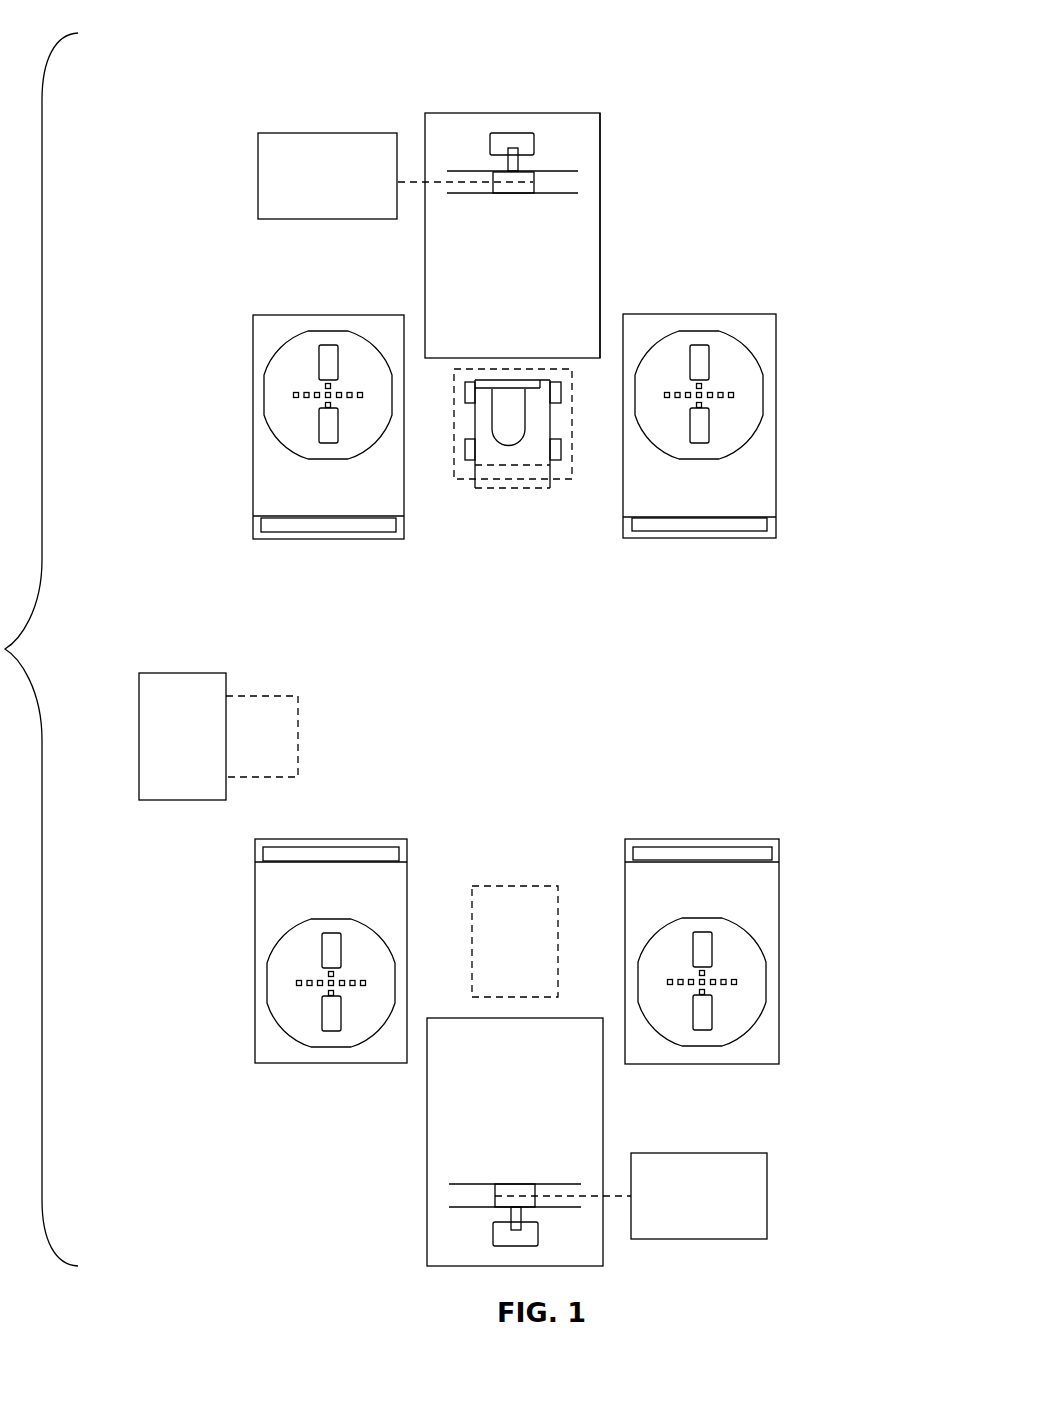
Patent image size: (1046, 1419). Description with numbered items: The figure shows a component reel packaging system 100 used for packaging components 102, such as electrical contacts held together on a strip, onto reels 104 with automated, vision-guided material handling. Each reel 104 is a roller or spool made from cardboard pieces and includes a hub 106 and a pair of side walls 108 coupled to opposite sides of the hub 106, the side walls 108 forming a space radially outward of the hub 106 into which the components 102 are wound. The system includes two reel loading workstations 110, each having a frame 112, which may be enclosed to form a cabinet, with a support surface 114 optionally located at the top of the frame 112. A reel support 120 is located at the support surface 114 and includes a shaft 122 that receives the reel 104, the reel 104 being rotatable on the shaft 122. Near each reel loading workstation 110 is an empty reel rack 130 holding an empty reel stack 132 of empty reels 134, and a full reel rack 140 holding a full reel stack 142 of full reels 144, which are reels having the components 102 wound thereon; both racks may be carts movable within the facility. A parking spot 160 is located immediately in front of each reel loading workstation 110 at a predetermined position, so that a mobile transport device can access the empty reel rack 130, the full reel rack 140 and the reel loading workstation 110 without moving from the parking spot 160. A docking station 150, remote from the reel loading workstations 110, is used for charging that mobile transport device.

The component reel packaging system 100 is at (829, 67).
The components 102 is at (417, 177).
The reel 104 is at (526, 650).
The hub 106 is at (534, 183).
The side walls 108 is at (570, 170).
The reel loading workstation 110 is at (606, 260).
The frame 112 is at (600, 290).
The support surface 114 is at (465, 270).
The reel support 120 is at (500, 127).
The shaft 122 is at (507, 165).
The empty reel rack 130 is at (525, 683).
The empty reel stack 132 is at (749, 381).
The empty reels 134 is at (748, 415).
The full reel rack 140 is at (520, 689).
The full reel stack 142 is at (270, 403).
The full reels 144 is at (278, 373).
The docking station 150 is at (171, 807).
The parking spot 160 is at (559, 481).